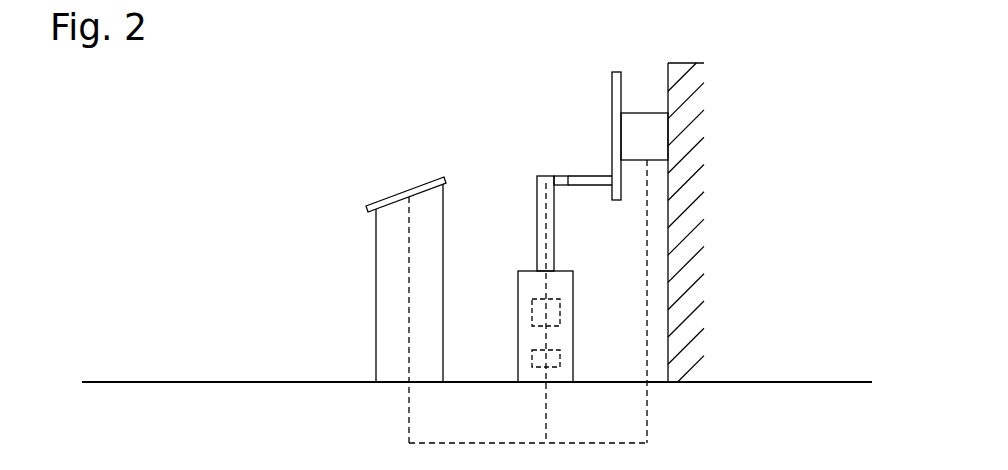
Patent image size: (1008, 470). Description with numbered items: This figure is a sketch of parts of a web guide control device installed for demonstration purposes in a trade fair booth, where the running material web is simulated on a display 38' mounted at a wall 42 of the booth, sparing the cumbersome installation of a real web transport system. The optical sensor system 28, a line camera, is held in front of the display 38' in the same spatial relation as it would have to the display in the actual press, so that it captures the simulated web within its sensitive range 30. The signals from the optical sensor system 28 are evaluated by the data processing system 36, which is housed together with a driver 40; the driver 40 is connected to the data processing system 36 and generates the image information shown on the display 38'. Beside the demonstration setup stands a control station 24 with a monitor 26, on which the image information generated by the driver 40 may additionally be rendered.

The control station 24 is at (376, 300).
The monitor 26 is at (384, 203).
The optical sensor system 28 is at (565, 178).
The sensitive range 30 is at (592, 187).
The data processing system 36 is at (552, 316).
The display 38' is at (572, 107).
The driver 40 is at (538, 367).
The wall 42 is at (686, 63).